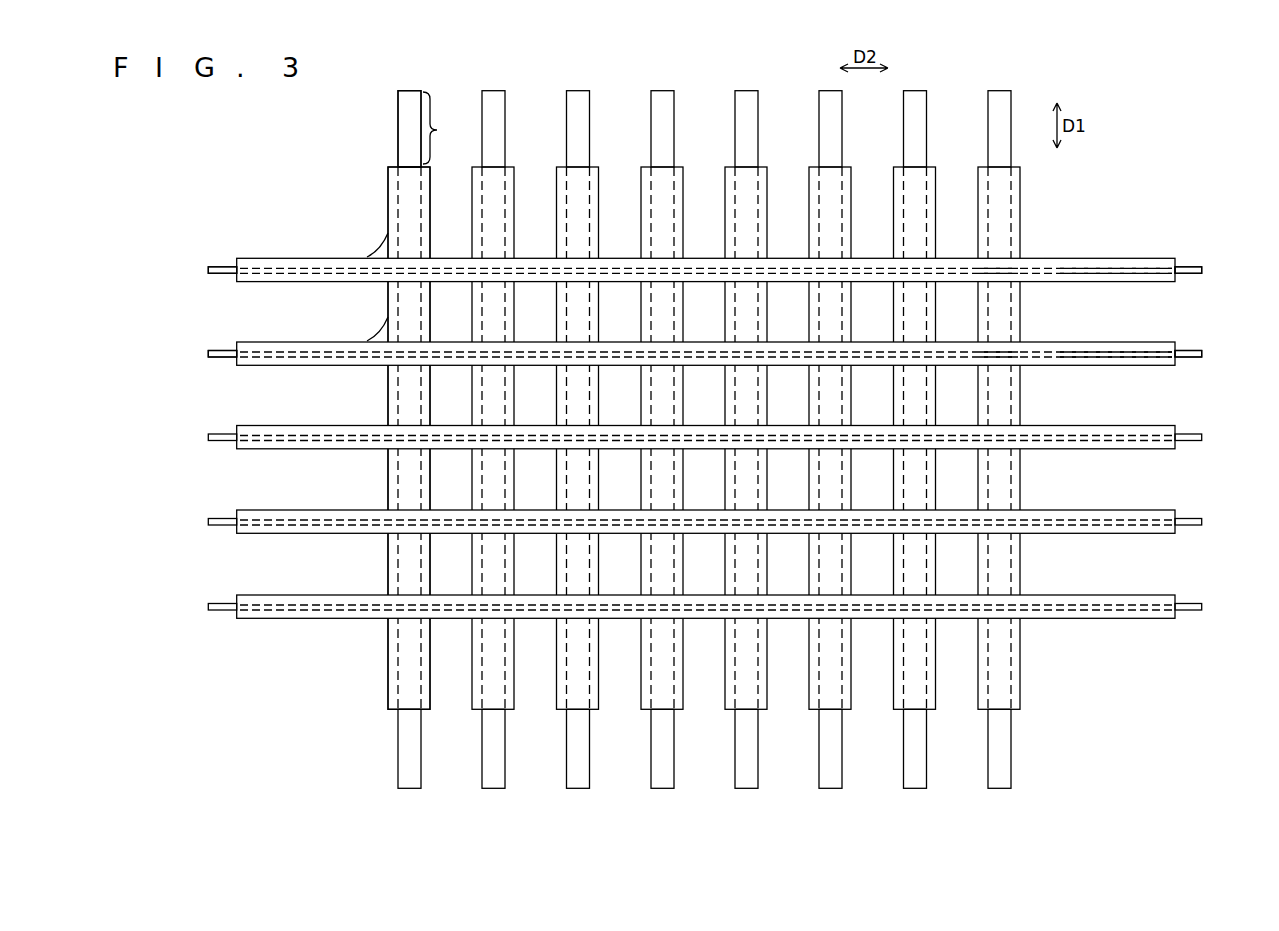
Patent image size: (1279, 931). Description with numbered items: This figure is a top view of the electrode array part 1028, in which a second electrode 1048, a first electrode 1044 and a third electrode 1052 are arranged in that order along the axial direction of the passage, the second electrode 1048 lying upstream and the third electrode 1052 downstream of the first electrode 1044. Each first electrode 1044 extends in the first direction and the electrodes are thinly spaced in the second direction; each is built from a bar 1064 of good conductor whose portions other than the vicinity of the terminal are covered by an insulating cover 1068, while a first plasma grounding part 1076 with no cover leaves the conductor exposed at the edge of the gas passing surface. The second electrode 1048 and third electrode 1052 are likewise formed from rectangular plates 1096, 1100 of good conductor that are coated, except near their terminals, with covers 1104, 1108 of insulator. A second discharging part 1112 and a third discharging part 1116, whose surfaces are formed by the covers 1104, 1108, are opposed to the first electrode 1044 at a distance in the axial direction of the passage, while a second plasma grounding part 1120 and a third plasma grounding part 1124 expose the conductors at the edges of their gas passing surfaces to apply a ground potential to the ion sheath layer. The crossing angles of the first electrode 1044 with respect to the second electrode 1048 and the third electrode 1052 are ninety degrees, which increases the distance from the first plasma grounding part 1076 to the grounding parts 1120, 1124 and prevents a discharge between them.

The electrode array part 1028 is at (1110, 196).
The first electrode 1044 is at (1038, 808).
The second electrode 1048 is at (1157, 595).
The third electrode 1052 is at (248, 533).
The bar 1064 is at (405, 112).
The cover 1068 is at (393, 181).
The first plasma grounding part 1076 is at (455, 128).
The rectangular plate 1096 is at (1188, 274).
The rectangular plate 1100 is at (1188, 358).
The cover 1104 is at (1105, 262).
The cover 1108 is at (1113, 348).
The second discharging part 1112 is at (1000, 270).
The third discharging part 1116 is at (1000, 352).
The second plasma grounding part 1120 is at (223, 246).
The third plasma grounding part 1124 is at (210, 369).